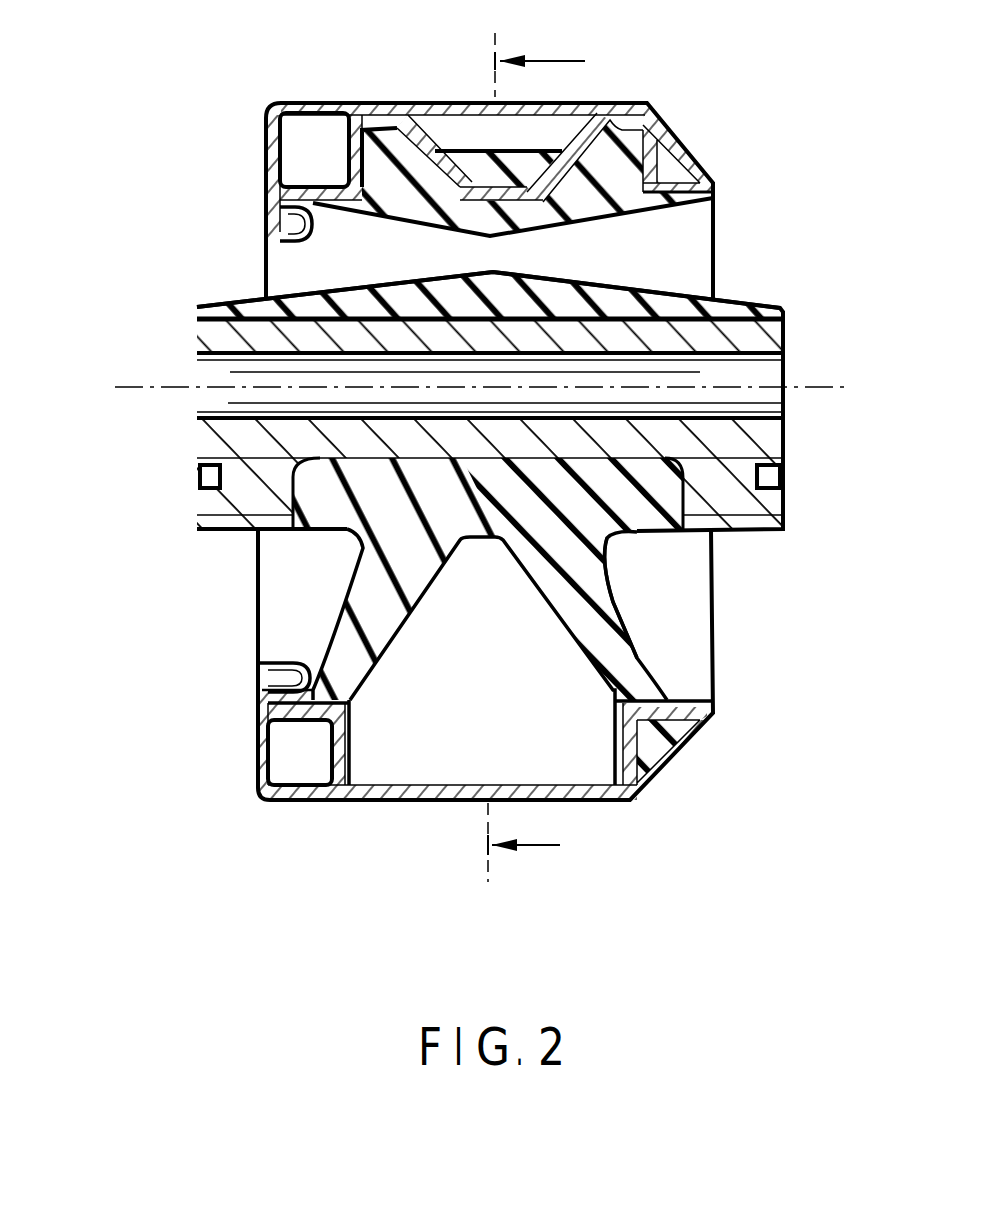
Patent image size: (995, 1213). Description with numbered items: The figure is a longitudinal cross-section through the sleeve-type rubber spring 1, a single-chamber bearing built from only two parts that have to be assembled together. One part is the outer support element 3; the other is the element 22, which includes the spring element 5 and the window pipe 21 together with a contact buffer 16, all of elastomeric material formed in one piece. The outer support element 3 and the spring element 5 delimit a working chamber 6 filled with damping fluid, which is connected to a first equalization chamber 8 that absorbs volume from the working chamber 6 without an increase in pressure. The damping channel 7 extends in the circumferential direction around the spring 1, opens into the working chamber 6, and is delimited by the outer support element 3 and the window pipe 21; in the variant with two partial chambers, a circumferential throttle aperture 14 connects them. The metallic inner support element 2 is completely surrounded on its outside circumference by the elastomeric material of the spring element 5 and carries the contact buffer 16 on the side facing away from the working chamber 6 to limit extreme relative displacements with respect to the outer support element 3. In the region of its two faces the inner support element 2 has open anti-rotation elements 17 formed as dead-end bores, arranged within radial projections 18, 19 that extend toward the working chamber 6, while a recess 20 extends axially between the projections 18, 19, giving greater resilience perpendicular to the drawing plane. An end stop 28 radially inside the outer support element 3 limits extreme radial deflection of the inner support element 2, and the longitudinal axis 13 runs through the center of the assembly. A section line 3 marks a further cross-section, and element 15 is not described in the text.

The sleeve-type rubber spring 1 is at (773, 703).
The inner support element 2 is at (767, 337).
The outer support element 3 is at (742, 100).
The spring element 5 is at (350, 503).
The working chamber 6 is at (570, 740).
The damping channel 7 is at (306, 162).
The first equalization chamber 8 is at (565, 130).
The longitudinal axis 13 is at (147, 388).
The throttle aperture 14 is at (453, 133).
The raceway 15 is at (717, 315).
The contact buffer 16 is at (400, 292).
The anti-rotation elements 17 is at (777, 477).
The radial projection 18 is at (263, 470).
The radial projection 19 is at (785, 513).
The recess 20 is at (613, 537).
The window pipe 21 is at (367, 163).
The element 22 is at (270, 683).
The end stop 28 is at (283, 216).